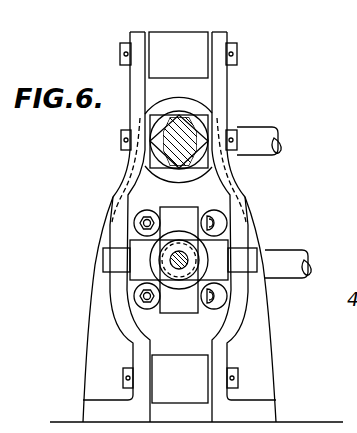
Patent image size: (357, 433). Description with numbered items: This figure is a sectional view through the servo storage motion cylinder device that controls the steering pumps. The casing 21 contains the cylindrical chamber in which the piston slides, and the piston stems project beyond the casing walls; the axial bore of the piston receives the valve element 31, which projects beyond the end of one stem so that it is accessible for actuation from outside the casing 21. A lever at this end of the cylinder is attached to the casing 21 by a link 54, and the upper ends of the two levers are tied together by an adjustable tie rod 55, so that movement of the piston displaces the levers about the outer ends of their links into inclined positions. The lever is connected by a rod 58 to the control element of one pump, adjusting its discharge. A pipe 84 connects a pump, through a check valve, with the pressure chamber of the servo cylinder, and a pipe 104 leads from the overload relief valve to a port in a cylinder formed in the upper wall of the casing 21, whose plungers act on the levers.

The casing 21 is at (100, 233).
The valve element 31 is at (172, 266).
The link 54 is at (172, 363).
The adjustable tie rod 55 is at (172, 41).
The rod 58 is at (205, 116).
The pipe 84 is at (288, 252).
The pipe 104 is at (270, 139).